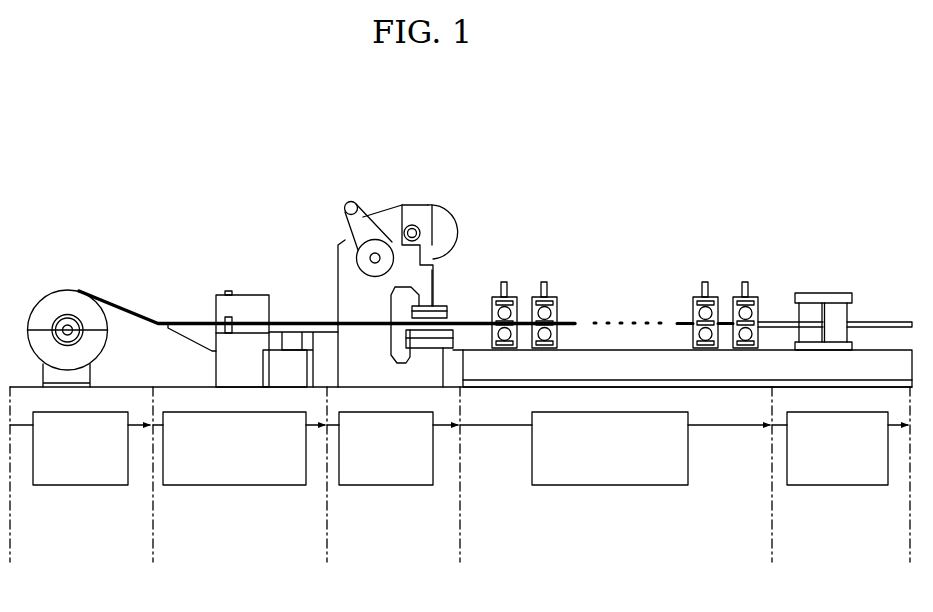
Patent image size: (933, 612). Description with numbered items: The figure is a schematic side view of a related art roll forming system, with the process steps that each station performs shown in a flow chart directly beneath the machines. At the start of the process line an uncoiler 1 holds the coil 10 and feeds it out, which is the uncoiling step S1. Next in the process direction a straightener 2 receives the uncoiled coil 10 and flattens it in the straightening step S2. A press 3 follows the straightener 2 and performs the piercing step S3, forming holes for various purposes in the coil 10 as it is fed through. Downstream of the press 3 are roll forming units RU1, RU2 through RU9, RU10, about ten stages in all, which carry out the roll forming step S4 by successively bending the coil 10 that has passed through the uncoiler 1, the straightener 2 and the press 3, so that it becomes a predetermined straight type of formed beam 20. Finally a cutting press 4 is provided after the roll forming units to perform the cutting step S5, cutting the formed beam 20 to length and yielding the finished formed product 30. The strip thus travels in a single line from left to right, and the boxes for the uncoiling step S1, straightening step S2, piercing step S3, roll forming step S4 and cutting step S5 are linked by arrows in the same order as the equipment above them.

The uncoiler 1 is at (70, 316).
The coil 10 is at (110, 302).
The straightener 2 is at (246, 288).
The press 3 is at (398, 194).
The roll forming unit RU1 is at (505, 280).
The roll forming unit RU2 is at (549, 280).
The roll forming unit RU9 is at (701, 280).
The roll forming unit RU10 is at (746, 280).
The cutting press 4 is at (828, 266).
The formed beam 20 is at (775, 320).
The formed product 30 is at (885, 320).
The uncoiling step S1 is at (79, 486).
The straightening step S2 is at (236, 486).
The piercing step S3 is at (386, 486).
The roll forming step S4 is at (626, 486).
The cutting step S5 is at (820, 486).